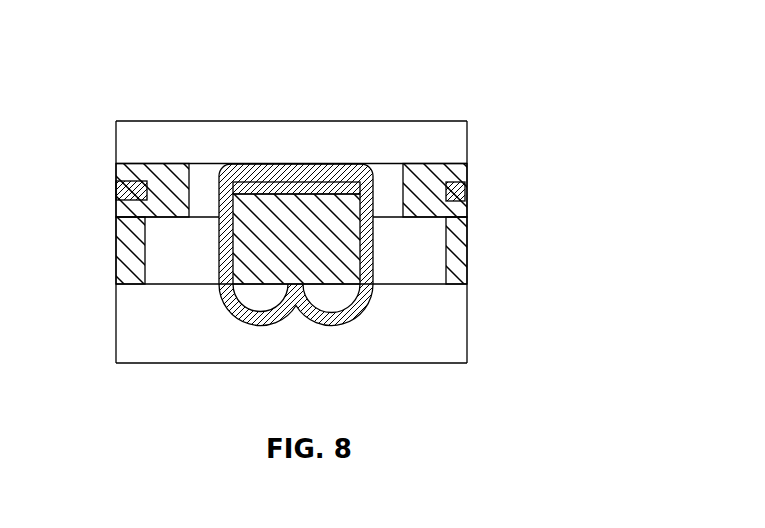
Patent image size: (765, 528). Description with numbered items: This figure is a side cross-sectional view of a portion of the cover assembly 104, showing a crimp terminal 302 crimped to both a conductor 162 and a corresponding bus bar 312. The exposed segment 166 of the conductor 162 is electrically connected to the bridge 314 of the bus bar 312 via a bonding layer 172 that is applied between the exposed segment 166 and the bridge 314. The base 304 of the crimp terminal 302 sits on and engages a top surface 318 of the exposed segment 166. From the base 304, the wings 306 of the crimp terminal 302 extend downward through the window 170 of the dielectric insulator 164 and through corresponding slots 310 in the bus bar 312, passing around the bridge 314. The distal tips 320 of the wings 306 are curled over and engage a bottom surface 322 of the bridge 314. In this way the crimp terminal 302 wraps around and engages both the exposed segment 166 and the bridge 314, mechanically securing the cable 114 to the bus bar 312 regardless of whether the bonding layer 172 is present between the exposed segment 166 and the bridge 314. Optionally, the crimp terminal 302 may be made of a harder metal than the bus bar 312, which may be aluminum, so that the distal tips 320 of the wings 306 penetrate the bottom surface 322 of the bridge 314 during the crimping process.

The cover assembly 104 is at (477, 42).
The cable 114 is at (427, 172).
The conductor 162 is at (327, 115).
The dielectric insulator 164 is at (457, 216).
The exposed segment 166 is at (307, 185).
The window 170 is at (385, 178).
The bonding layer 172 is at (385, 178).
The crimp terminal 302 is at (290, 199).
The base 304 is at (290, 180).
The wings 306 is at (217, 247).
The slots 310 is at (390, 282).
The bus bar 312 is at (378, 267).
The bridge 314 is at (358, 247).
The top surface 318 is at (290, 180).
The distal tips 320 is at (252, 293).
The bottom surface 322 is at (248, 316).